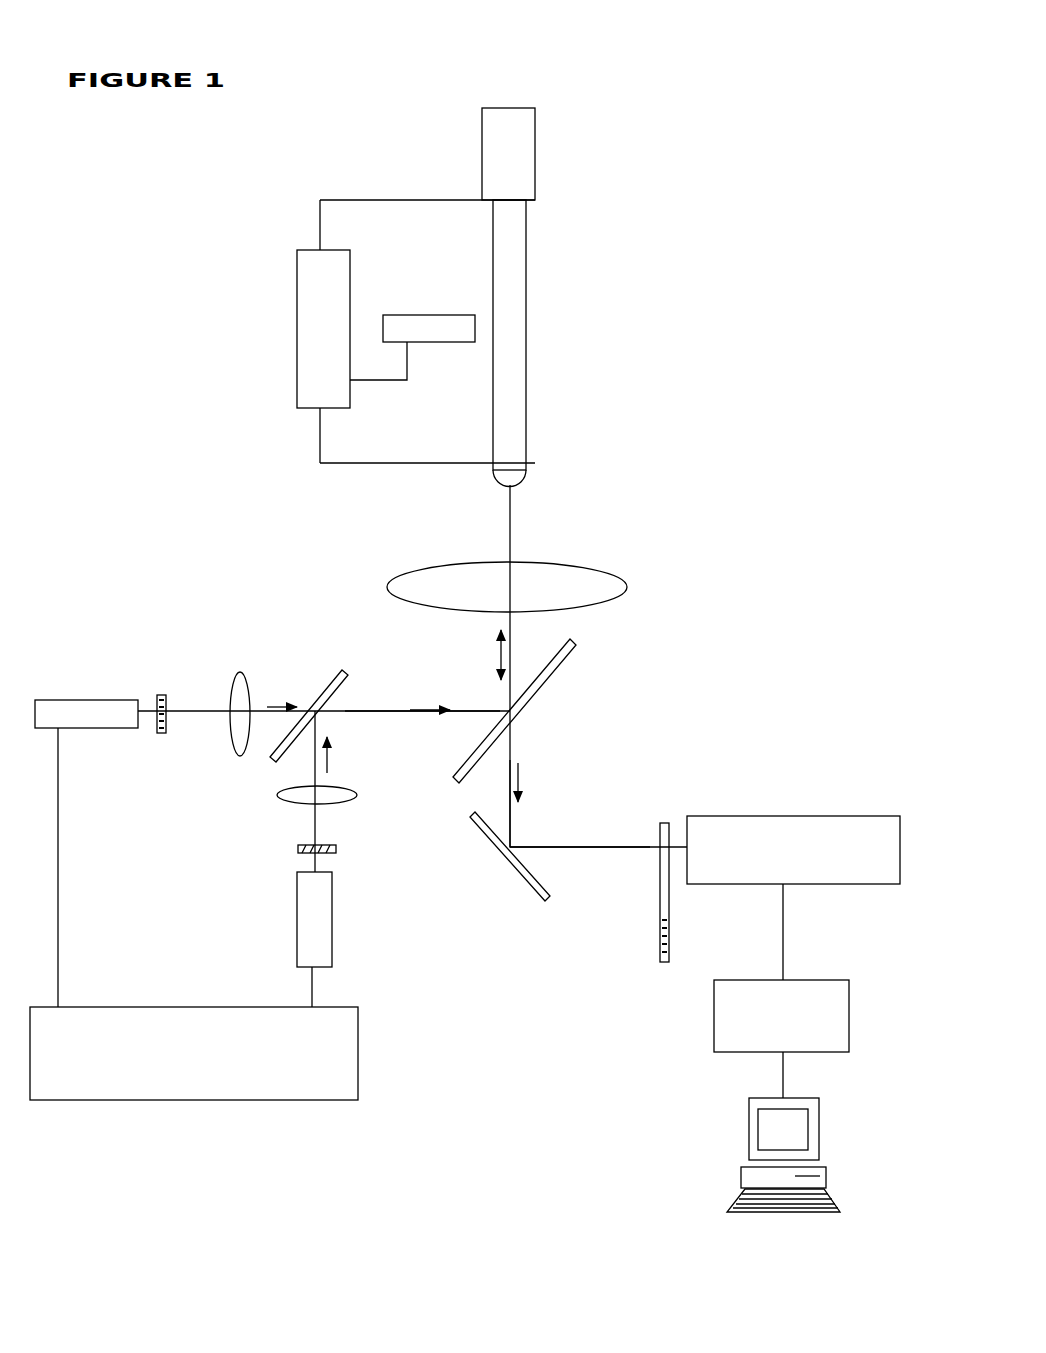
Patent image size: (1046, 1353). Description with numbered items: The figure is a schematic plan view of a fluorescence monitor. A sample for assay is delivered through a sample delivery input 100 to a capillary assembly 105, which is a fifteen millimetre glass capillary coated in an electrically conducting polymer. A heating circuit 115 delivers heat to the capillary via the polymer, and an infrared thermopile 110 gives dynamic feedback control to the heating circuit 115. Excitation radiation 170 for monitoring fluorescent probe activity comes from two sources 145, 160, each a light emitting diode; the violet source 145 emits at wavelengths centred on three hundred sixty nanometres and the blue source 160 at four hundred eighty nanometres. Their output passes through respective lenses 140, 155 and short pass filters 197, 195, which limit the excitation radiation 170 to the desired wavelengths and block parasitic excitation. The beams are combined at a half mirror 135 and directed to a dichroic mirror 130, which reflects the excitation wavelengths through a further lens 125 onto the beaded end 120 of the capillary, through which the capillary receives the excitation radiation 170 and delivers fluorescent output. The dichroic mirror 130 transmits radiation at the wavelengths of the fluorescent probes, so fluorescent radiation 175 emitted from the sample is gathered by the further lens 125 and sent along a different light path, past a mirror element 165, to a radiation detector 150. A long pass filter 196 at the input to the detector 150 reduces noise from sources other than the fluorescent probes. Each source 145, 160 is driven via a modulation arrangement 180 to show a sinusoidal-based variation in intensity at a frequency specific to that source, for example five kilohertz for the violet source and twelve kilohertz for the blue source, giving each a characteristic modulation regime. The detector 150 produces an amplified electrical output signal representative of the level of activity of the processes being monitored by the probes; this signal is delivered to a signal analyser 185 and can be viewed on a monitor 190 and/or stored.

The sample delivery input 100 is at (535, 162).
The capillary assembly 105 is at (526, 360).
The infrared thermopile 110 is at (448, 315).
The heating circuit 115 is at (297, 335).
The beaded end 120 is at (522, 480).
The further lens 125 is at (613, 573).
The dichroic mirror 130 is at (553, 679).
The half mirror 135 is at (332, 677).
The lens 140 is at (240, 670).
The source 145 is at (100, 700).
The radiation detector 150 is at (780, 815).
The lens 155 is at (277, 793).
The source 160 is at (297, 872).
The mirror 165 is at (525, 882).
The excitation radiation 170 is at (487, 717).
The fluorescent radiation 175 is at (569, 847).
The modulation arrangement 180 is at (200, 1097).
The signal analyser 185 is at (714, 1025).
The monitor 190 is at (749, 1134).
The short pass filter 195 is at (337, 848).
The long pass filter 196 is at (662, 820).
The short pass filter 197 is at (162, 692).